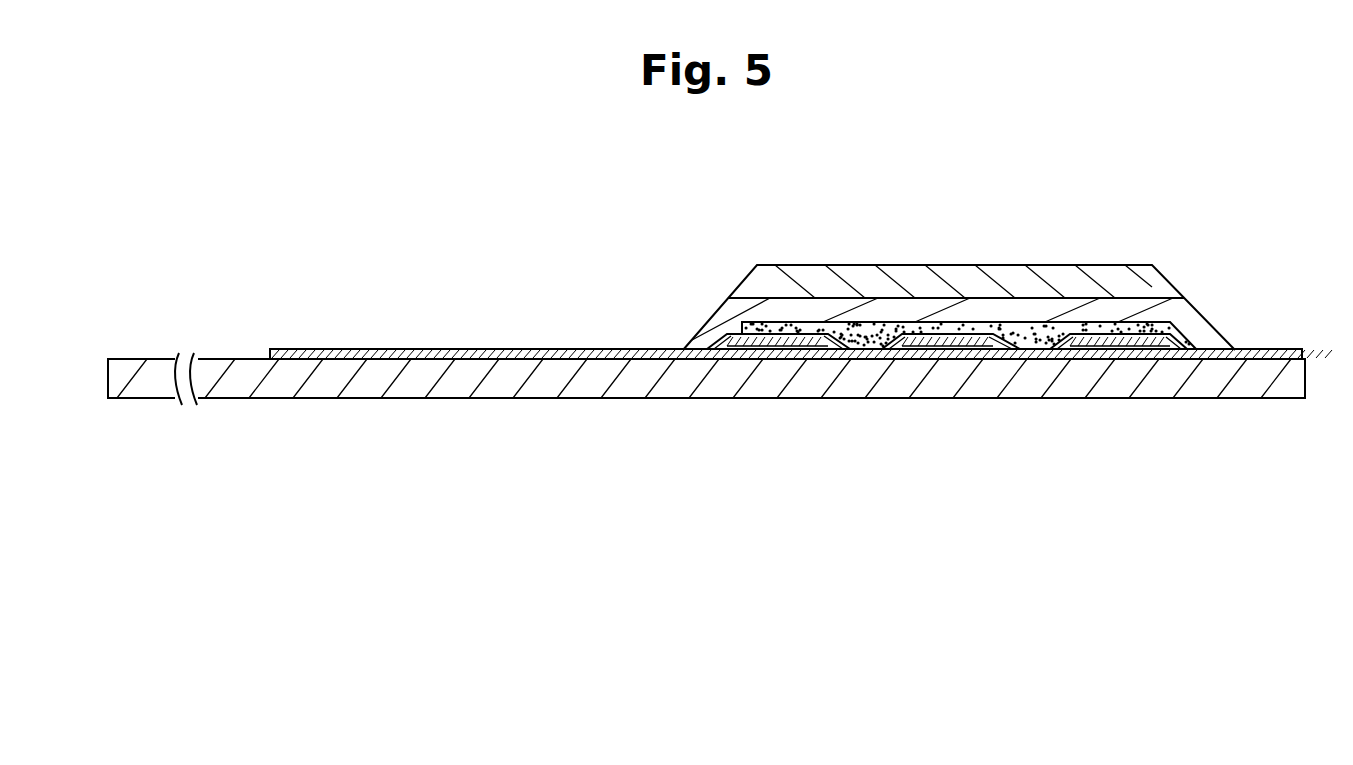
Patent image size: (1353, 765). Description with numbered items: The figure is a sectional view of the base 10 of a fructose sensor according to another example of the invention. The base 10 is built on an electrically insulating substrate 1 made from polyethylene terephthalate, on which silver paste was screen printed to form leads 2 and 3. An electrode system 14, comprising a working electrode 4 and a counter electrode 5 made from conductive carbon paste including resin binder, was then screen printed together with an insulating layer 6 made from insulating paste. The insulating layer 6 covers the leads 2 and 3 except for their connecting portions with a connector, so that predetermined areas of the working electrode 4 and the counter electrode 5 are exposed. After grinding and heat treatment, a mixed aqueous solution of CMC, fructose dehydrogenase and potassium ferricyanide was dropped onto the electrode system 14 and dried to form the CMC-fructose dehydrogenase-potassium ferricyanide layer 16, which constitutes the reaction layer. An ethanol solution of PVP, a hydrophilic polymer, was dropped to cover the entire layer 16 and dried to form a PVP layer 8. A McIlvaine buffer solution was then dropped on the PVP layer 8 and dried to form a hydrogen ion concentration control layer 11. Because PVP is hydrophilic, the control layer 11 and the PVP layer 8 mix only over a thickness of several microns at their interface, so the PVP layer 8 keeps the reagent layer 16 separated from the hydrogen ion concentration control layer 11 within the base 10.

The insulating substrate 1 is at (272, 400).
The lead 2 is at (943, 352).
The lead 3 is at (795, 352).
The working electrode 4 is at (975, 352).
The counter electrode 5 is at (785, 340).
The insulating layer 6 is at (633, 348).
The PVP layer 8 is at (1015, 308).
The base 10 is at (641, 215).
The hydrogen ion concentration control layer 11 is at (1055, 275).
The electrode system 14 is at (1053, 506).
The CMC-fructose dehydrogenase-potassium ferricyanide layer 16 is at (960, 322).